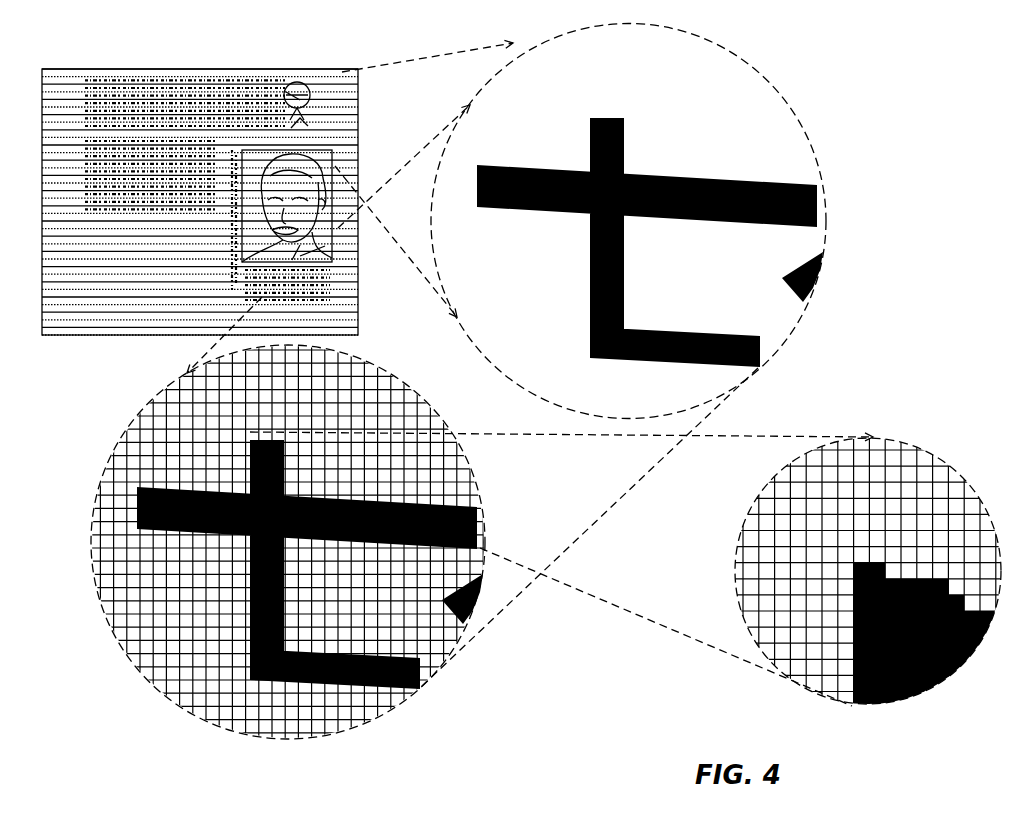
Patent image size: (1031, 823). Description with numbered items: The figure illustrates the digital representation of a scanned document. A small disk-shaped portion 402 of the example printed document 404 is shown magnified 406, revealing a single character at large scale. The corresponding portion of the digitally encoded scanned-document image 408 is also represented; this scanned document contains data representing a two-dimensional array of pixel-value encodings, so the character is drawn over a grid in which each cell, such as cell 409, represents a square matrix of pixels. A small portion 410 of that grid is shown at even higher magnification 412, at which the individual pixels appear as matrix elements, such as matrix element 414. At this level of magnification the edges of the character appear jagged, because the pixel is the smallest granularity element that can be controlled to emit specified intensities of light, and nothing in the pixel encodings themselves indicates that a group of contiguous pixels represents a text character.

The small disk-shaped portion 402 is at (297, 80).
The printed document 404 is at (87, 68).
The magnified portion 406 is at (767, 78).
The digitally encoded scanned-document image 408 is at (100, 658).
The cell 409 is at (250, 737).
The small portion of the grid 410 is at (258, 432).
The higher magnification view 412 is at (908, 442).
The matrix element 414 is at (800, 507).